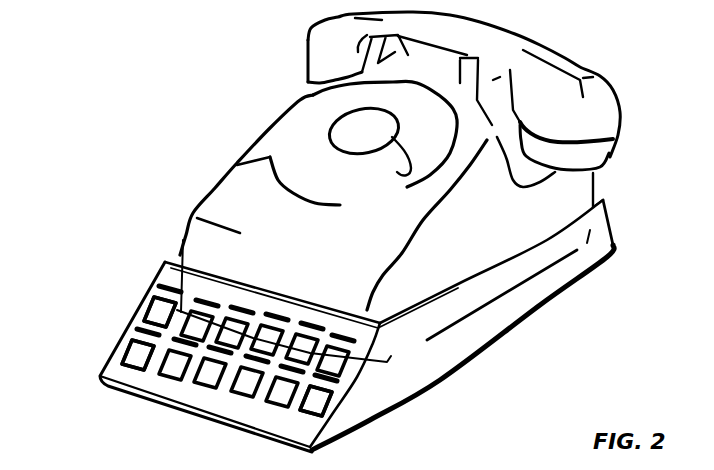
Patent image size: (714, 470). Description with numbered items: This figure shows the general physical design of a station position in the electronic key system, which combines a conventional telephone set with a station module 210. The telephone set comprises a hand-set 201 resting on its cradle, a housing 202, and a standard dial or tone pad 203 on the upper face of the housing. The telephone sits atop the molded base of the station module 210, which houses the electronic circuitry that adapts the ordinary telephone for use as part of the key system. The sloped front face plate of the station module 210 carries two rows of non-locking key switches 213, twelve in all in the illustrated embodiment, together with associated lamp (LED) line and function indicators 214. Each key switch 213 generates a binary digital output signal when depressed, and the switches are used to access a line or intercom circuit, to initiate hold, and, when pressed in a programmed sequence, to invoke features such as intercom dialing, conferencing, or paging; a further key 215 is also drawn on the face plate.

The hand-set 201 is at (495, 91).
The housing 202 is at (442, 172).
The standard dial or tone pad 203 is at (318, 143).
The station module 210 is at (357, 326).
The non-locking key switches 213 is at (135, 292).
The lamp (LED) line and function indicators 214 is at (87, 348).
The key 215 is at (363, 417).